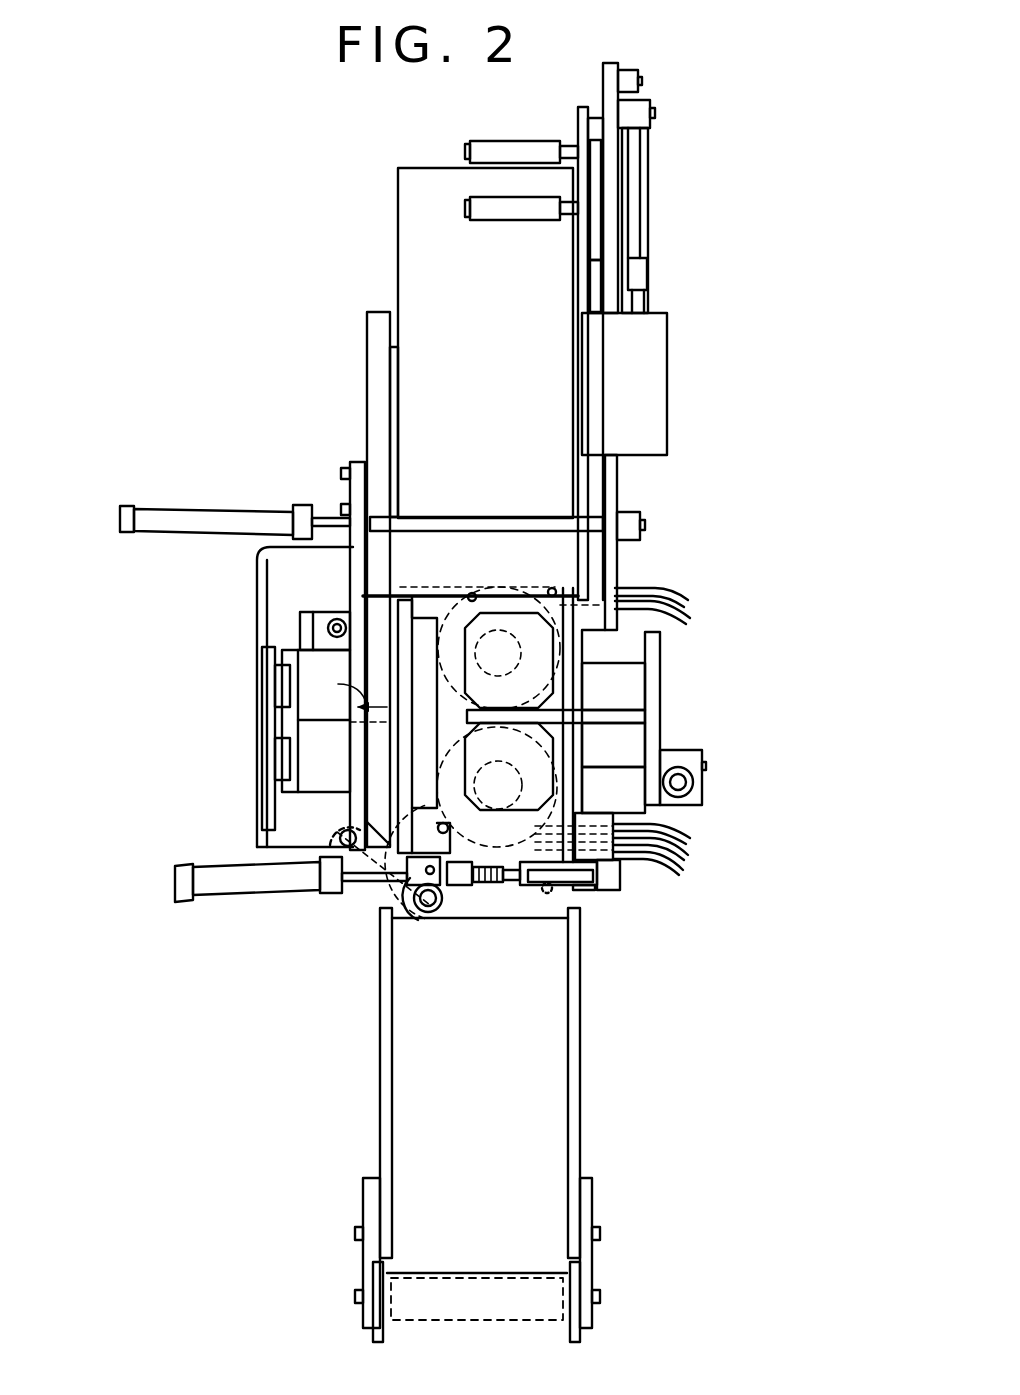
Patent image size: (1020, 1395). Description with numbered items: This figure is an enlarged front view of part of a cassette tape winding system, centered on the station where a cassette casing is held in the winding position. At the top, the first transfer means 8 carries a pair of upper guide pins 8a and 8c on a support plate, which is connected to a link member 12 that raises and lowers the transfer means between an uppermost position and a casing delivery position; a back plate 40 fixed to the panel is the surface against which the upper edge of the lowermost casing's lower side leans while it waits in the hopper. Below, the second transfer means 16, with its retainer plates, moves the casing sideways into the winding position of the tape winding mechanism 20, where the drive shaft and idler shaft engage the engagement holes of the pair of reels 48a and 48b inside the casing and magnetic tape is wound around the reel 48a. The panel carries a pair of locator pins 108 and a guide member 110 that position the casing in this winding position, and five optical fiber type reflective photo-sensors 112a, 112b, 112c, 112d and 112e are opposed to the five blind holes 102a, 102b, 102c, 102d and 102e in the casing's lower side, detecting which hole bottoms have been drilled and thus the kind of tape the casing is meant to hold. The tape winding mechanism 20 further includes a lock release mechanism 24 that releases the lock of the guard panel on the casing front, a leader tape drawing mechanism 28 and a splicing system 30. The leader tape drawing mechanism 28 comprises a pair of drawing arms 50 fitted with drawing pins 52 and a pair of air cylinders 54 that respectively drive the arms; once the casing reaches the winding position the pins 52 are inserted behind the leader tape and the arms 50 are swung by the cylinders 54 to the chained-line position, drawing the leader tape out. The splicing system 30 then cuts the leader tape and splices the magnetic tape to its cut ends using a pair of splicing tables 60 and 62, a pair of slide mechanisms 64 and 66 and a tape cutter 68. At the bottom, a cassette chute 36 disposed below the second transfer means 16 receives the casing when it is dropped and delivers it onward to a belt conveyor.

The first transfer means 8 is at (487, 181).
The upper guide pin 8a is at (516, 212).
The upper guide pin 8c is at (527, 147).
The link member 12 is at (648, 212).
The second transfer means 16 is at (669, 696).
The tape winding mechanism 20 is at (323, 492).
The lock release mechanism 24 is at (586, 890).
The leader tape drawing mechanism 28 is at (263, 690).
The splicing system 30 is at (280, 697).
The cassette chute 36 is at (582, 1066).
The back plate 40 is at (398, 282).
The reel 48a is at (583, 742).
The reel 48b is at (580, 684).
The drawing arm 50 is at (414, 920).
The drawing pin 52 is at (340, 836).
The air cylinder 54 is at (214, 520).
The splicing table 60 is at (321, 612).
The splicing table 62 is at (303, 792).
The slide mechanism 64 is at (280, 690).
The slide mechanism 66 is at (278, 762).
The tape cutter 68 is at (357, 730).
The blind hole 102a is at (547, 892).
The blind hole 102b is at (452, 818).
The blind hole 102c is at (584, 812).
The blind hole 102d is at (528, 583).
The blind hole 102e is at (552, 586).
The locator pin 108 is at (433, 583).
The guide member 110 is at (499, 888).
The reflective photo-sensor 112a is at (640, 858).
The reflective photo-sensor 112b is at (668, 858).
The reflective photo-sensor 112c is at (652, 820).
The reflective photo-sensor 112d is at (657, 615).
The reflective photo-sensor 112e is at (645, 587).